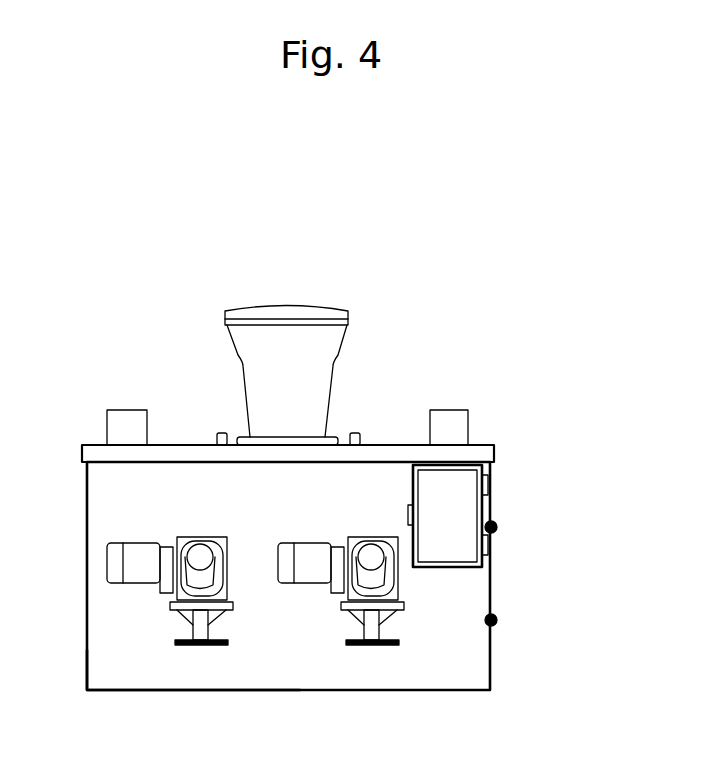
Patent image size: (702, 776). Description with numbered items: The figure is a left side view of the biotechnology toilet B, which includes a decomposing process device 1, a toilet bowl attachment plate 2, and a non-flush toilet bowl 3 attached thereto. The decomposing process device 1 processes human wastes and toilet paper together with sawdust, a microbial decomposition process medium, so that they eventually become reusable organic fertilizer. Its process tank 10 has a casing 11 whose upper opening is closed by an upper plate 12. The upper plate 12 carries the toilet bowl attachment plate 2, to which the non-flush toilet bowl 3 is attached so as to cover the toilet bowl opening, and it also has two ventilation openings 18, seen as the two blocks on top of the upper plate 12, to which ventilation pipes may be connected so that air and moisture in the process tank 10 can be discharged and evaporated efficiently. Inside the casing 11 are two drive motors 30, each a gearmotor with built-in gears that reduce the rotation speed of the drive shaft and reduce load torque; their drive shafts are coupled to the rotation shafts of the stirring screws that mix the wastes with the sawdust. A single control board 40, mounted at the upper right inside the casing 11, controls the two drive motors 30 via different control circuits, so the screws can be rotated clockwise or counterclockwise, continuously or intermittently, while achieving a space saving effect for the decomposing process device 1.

The decomposing process device 1 is at (452, 593).
The process tank 10 is at (465, 637).
The casing 11 is at (443, 655).
The upper plate 12 is at (397, 445).
The ventilation openings 18 is at (123, 427).
The toilet bowl attachment plate 2 is at (326, 438).
The non-flush toilet bowl 3 is at (293, 352).
The drive motors 30 is at (372, 578).
The control board 40 is at (457, 512).
The biotechnology toilet B is at (535, 410).